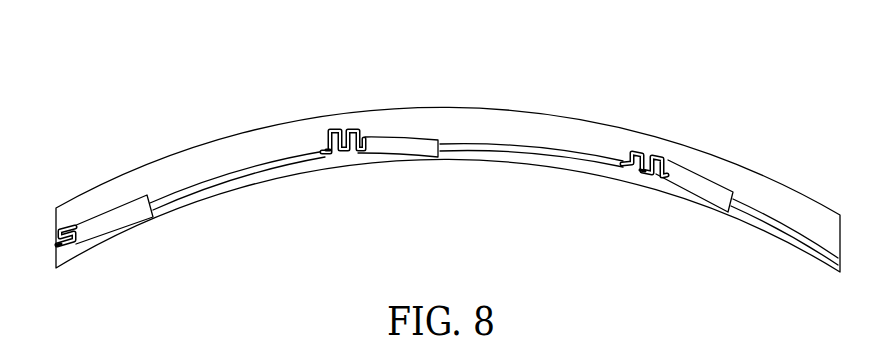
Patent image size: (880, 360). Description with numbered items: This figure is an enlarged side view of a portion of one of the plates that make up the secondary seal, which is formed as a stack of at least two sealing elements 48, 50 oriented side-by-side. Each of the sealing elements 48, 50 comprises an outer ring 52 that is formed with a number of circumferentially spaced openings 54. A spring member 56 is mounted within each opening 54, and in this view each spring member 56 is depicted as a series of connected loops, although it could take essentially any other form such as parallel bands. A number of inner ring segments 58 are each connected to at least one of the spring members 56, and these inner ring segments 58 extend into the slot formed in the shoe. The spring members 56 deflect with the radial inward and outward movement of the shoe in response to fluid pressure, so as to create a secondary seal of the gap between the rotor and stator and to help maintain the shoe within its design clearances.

The sealing element 48 is at (433, 181).
The sealing element 50 is at (727, 121).
The outer ring 52 is at (213, 140).
The opening 54 is at (69, 222).
The spring member 56 is at (57, 247).
The inner ring segment 58 is at (118, 233).